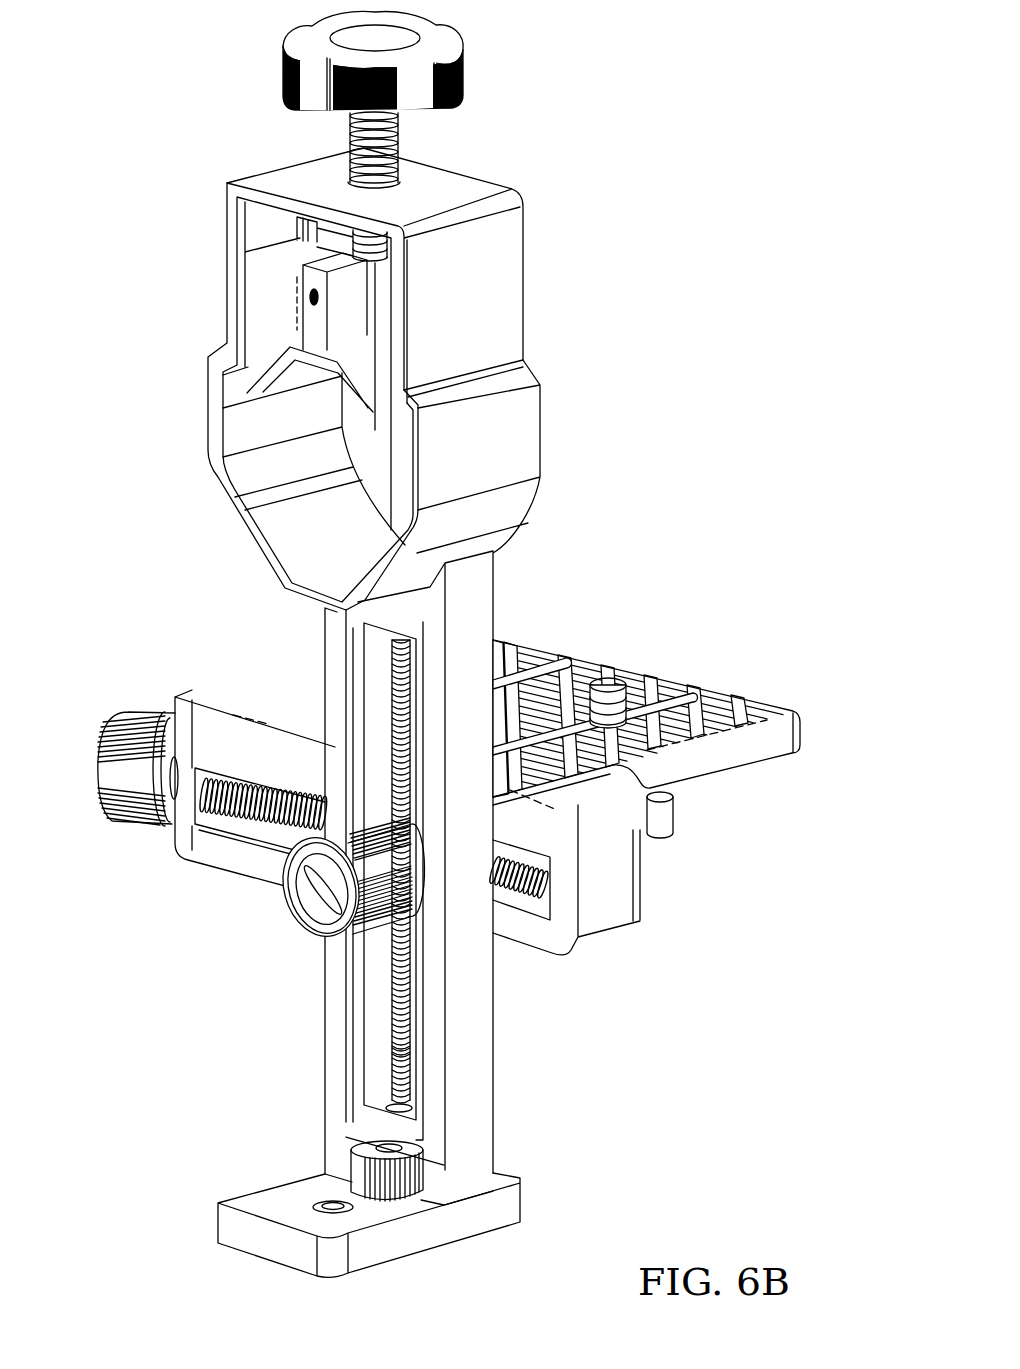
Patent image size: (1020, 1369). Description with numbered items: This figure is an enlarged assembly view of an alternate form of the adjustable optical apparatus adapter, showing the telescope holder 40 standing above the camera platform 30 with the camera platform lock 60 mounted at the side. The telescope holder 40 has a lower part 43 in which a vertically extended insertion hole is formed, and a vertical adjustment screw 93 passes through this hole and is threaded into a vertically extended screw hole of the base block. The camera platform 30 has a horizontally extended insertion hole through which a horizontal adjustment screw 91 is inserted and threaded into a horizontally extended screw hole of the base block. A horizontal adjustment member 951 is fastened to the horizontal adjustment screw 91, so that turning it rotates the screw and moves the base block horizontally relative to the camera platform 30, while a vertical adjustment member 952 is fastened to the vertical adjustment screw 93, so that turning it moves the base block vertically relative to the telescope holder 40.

The telescope holder 40 is at (524, 184).
The camera platform 30 is at (743, 695).
The lower part 43 is at (493, 1070).
The camera platform lock 60 is at (297, 921).
The horizontal adjustment screw 91 is at (234, 822).
The vertical adjustment screw 93 is at (392, 1028).
The horizontal adjustment member 951 is at (137, 712).
The vertical adjustment member 952 is at (350, 1175).